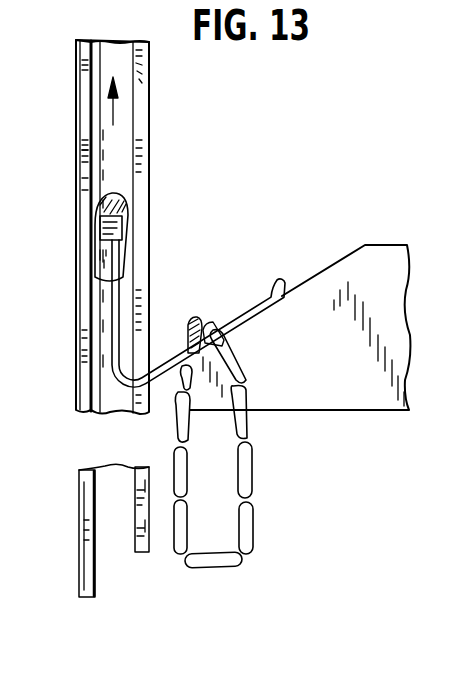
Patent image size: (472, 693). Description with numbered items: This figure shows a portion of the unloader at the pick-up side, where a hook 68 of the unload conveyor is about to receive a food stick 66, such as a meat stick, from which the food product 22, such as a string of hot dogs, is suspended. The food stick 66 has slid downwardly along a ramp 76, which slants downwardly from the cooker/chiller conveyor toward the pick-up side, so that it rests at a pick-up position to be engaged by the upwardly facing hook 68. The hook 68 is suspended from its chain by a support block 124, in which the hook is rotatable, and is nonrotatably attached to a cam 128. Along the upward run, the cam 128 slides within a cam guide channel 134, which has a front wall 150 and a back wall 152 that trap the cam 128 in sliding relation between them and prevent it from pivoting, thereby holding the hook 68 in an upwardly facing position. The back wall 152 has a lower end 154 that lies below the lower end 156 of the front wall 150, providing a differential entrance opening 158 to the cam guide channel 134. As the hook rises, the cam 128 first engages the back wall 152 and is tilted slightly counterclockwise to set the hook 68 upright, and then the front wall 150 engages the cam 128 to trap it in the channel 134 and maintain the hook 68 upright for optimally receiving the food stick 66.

The cam guide channel 134 is at (122, 55).
The front wall 150 is at (128, 138).
The back wall 152 is at (86, 146).
The cam 128 is at (120, 212).
The support block 124 is at (118, 230).
The hook 68 is at (277, 310).
The ramp 76 is at (313, 291).
The food stick 66 is at (212, 332).
The food product 22 is at (247, 520).
The lower end of back wall 154 is at (91, 598).
The lower end of front wall 156 is at (145, 553).
The differential entrance opening 158 is at (118, 538).